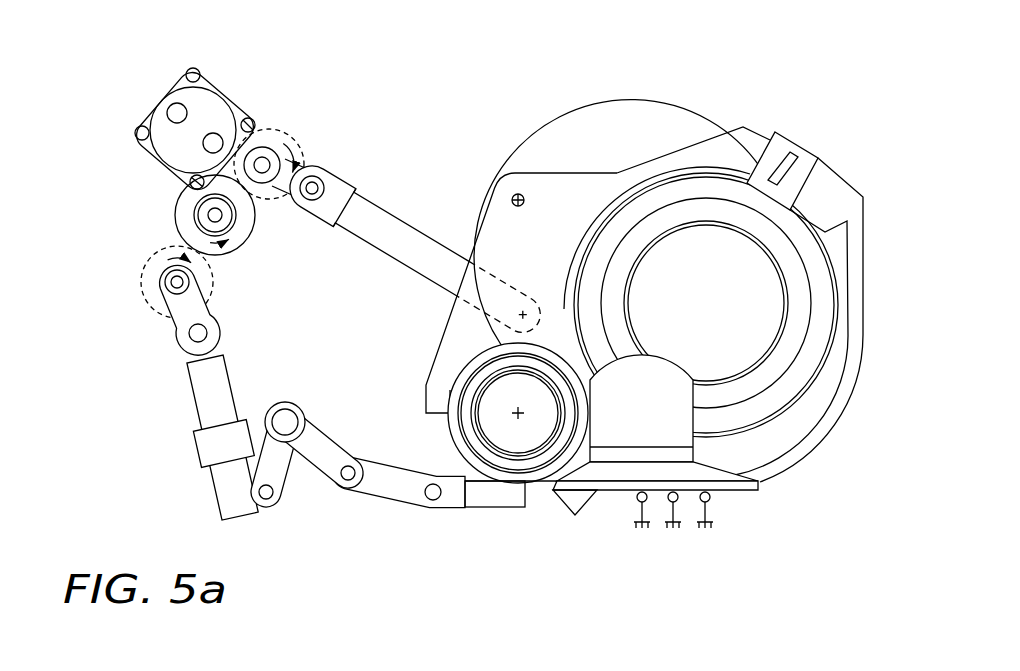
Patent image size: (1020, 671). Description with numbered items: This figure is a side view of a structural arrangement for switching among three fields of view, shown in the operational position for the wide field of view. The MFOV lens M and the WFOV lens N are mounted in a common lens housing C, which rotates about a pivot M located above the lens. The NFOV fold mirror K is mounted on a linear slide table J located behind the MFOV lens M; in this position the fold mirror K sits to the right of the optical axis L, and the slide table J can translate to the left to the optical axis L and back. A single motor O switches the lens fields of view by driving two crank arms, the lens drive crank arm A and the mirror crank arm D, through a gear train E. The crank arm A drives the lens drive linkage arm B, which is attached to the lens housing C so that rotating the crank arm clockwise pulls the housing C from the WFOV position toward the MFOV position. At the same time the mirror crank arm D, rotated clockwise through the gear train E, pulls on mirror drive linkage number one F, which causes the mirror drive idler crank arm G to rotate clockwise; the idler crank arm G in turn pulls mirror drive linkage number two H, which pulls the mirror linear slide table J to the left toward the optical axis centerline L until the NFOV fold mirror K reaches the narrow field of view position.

The motor O is at (168, 102).
The lens drive crank arm A is at (339, 129).
The lens drive linkage arm B is at (415, 228).
The lens housing C is at (644, 257).
The MFOV lens and lens housing pivot M is at (640, 235).
The WFOV lens N is at (471, 379).
The optical axis L is at (550, 492).
The NFOV fold mirror K is at (641, 408).
The linear slide table J is at (651, 526).
The gear train E is at (242, 223).
The mirror crank arm D is at (126, 331).
The mirror drive linkage #1 F is at (159, 437).
The mirror drive idler crank arm G is at (307, 491).
The mirror drive linkage #2 H is at (429, 549).